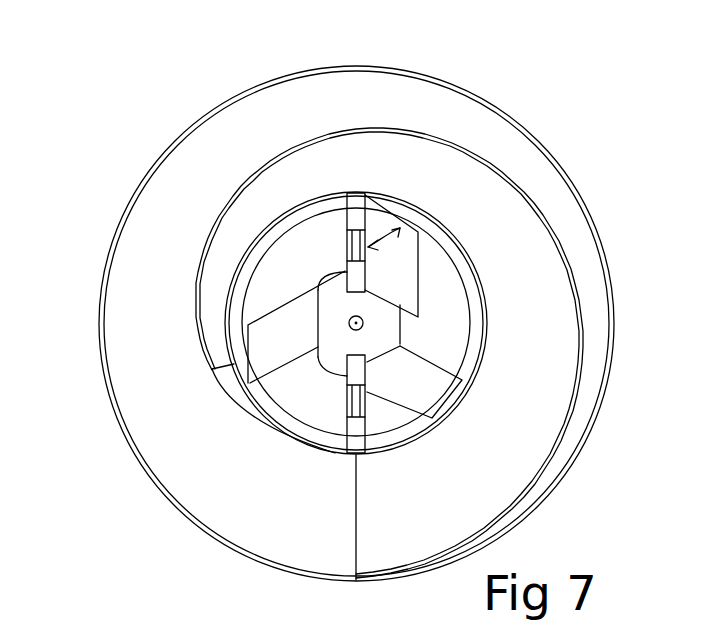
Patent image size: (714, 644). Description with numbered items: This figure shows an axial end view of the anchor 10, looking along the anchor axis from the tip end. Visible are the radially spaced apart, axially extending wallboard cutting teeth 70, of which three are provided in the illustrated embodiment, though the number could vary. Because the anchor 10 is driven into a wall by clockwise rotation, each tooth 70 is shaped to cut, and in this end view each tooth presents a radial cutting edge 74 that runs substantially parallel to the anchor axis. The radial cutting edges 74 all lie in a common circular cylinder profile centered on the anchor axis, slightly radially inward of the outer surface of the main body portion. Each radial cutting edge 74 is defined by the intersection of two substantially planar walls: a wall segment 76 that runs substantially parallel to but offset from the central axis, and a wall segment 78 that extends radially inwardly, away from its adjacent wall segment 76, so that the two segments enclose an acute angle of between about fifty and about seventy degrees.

The anchor 10 is at (502, 52).
The wallboard cutting teeth 70 is at (420, 254).
The radial cutting edge 74 is at (370, 247).
The wall segment 76 is at (368, 216).
The wall segment 78 is at (372, 212).